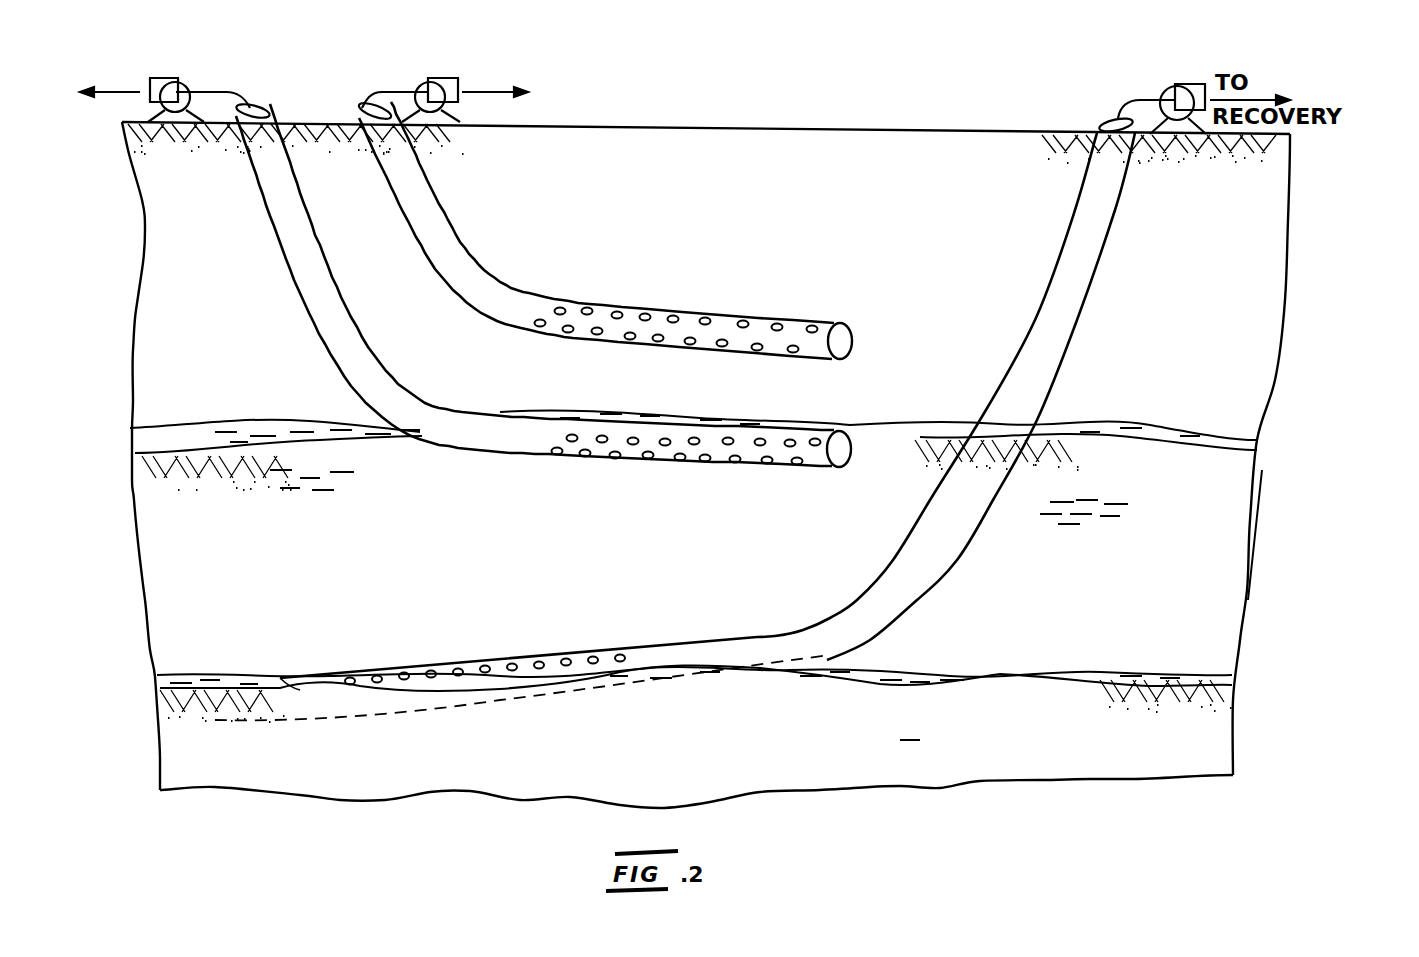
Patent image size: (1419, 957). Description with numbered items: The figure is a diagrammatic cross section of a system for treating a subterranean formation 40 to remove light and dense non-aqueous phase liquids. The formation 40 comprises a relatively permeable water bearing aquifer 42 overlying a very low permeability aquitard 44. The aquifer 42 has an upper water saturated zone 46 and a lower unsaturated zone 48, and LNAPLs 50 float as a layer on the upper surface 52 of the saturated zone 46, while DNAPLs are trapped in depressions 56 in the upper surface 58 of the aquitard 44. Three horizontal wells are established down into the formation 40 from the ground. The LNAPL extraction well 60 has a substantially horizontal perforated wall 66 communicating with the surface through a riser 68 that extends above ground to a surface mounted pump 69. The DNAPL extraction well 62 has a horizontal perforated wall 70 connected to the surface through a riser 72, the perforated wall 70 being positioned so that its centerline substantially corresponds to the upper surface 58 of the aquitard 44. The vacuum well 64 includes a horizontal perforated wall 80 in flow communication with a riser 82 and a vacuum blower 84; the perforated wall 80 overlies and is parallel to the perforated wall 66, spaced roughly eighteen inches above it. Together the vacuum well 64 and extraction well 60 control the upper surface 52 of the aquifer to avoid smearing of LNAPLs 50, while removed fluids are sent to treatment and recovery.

The formation 40 is at (1298, 286).
The aquifer 42 is at (1270, 500).
The aquitard 44 is at (998, 754).
The upper water saturated zone 46 is at (1128, 476).
The lower unsaturated zone 48 is at (1088, 658).
The LNAPLs 50 is at (257, 430).
The upper surface of the saturated zone 52 is at (1120, 430).
The depressions 56 is at (200, 698).
The upper surface of the aquitard 58 is at (219, 673).
The LNAPL extraction well 60 is at (528, 310).
The DNAPL extraction well 62 is at (733, 403).
The vacuum well 64 is at (604, 229).
The perforated wall 66 is at (602, 466).
The riser 68 is at (266, 216).
The surface mounted pump 69 is at (172, 78).
The perforated wall 70 is at (450, 657).
The riser 72 is at (1072, 205).
The perforated wall 80 is at (712, 312).
The riser 82 is at (416, 173).
The vacuum blower 84 is at (436, 78).